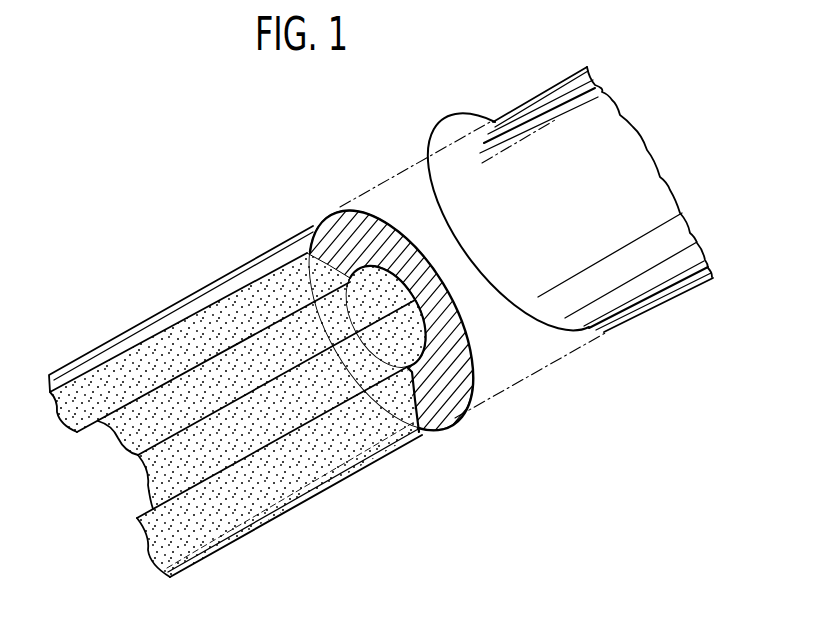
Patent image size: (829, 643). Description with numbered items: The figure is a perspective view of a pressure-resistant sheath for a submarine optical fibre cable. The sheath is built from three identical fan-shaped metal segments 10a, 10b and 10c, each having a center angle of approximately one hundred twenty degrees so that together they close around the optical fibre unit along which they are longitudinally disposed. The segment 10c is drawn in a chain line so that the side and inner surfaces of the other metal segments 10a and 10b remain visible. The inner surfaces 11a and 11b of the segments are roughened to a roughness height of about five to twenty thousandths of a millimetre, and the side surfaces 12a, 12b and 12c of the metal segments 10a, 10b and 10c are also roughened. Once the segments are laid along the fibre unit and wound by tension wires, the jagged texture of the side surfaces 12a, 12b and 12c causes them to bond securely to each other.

The fan-shaped metal segment 10a is at (381, 222).
The fan-shaped metal segment 10b is at (452, 388).
The fan-shaped metal segment 10c is at (330, 318).
The inner surface 11a is at (388, 297).
The inner surface 11b is at (407, 335).
The side surface 12a is at (333, 264).
The side surface 12b is at (407, 432).
The side surface 12c is at (437, 287).